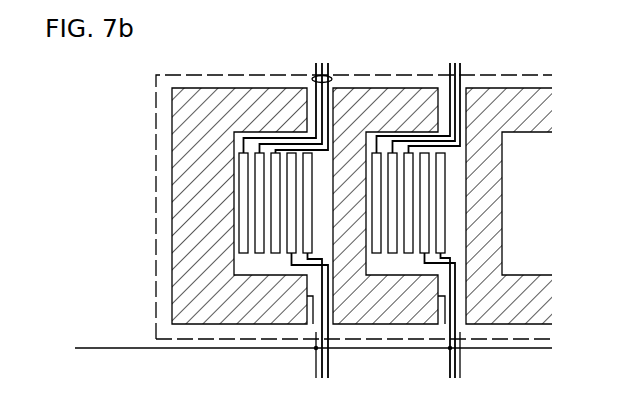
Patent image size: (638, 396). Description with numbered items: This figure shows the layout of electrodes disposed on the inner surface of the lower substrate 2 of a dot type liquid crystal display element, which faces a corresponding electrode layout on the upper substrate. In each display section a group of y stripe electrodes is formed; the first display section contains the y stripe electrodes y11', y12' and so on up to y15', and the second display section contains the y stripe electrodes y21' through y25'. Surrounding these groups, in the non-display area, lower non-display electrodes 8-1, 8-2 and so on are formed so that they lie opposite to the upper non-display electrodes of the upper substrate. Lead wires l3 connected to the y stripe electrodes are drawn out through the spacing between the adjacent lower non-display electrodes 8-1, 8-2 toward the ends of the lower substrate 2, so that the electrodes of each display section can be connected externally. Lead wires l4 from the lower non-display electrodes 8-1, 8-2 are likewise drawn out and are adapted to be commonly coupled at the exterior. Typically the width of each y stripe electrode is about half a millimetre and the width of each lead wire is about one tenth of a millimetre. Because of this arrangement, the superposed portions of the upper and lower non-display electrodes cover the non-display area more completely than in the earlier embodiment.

The lower substrate 2 is at (154, 114).
The lower non-display electrode 8-1 is at (237, 102).
The lower non-display electrode 8-2 is at (399, 102).
The y stripe electrode y11' is at (217, 158).
The y stripe electrode y12' is at (220, 158).
The y stripe electrode y15' is at (220, 265).
The y stripe electrode y21' is at (458, 158).
The y stripe electrode y25' is at (490, 265).
The lead wire l3 is at (331, 80).
The lead wire l4 is at (316, 345).